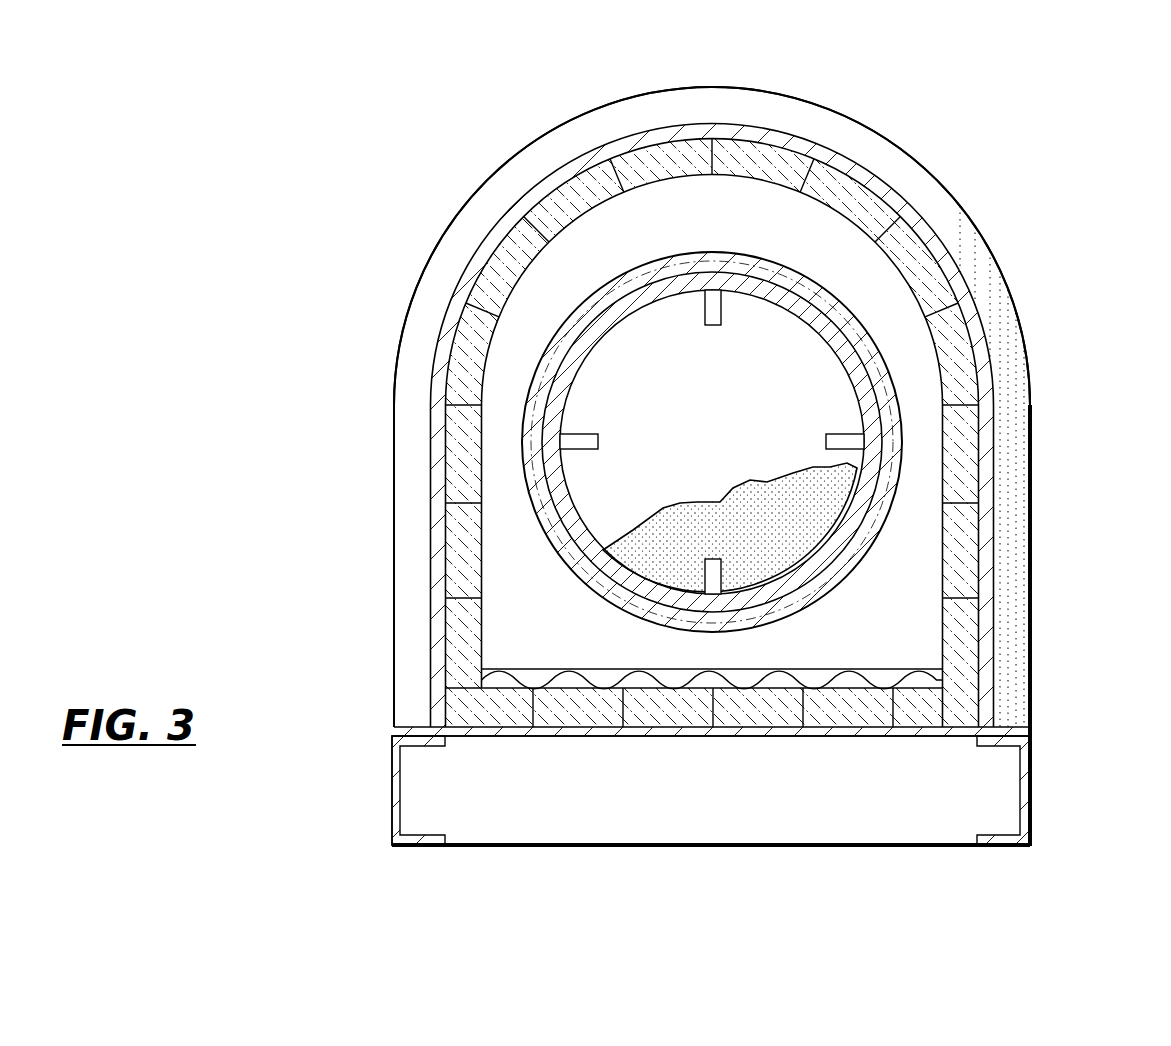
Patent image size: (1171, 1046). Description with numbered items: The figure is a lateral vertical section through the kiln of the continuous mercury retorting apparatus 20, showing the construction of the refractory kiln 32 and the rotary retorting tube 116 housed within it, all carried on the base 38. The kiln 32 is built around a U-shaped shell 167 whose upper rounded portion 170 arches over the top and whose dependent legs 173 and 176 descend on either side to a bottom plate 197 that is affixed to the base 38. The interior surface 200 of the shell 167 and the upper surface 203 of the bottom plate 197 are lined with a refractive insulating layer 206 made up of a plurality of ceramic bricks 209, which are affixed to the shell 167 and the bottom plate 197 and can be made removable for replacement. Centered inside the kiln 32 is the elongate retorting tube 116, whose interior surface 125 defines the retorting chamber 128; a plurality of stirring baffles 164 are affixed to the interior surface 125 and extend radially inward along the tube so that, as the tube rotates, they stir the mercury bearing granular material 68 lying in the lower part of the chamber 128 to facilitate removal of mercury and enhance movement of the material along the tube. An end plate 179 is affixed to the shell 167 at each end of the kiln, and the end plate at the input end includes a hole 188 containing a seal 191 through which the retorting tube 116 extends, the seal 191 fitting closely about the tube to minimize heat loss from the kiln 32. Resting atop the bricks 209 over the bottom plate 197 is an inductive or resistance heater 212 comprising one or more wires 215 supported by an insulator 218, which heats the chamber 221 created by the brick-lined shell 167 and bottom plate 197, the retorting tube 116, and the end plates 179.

The retorting apparatus 20 is at (1013, 112).
The refractory kiln 32 is at (1025, 242).
The base 38 is at (871, 850).
The mercury bearing granular material 68 is at (783, 512).
The retorting tube 116 is at (743, 270).
The interior surface 125 is at (620, 322).
The retorting chamber 128 is at (763, 322).
The stirring baffles 164 is at (722, 315).
The U-shaped shell 167 is at (987, 335).
The upper rounded portion 170 is at (805, 140).
The dependent leg 173 is at (993, 560).
The dependent leg 176 is at (430, 550).
The end plates 179 is at (563, 290).
The hole 188 is at (527, 145).
The seal 191 is at (583, 573).
The bottom plate 197 is at (645, 733).
The interior surface 200 is at (530, 238).
The upper surface 203 is at (826, 718).
The refractive insulating layer 206 is at (707, 193).
The ceramic bricks 209 is at (653, 158).
The heater 212 is at (902, 653).
The wires 215 is at (582, 684).
The insulator 218 is at (913, 692).
The chamber 221 is at (507, 467).